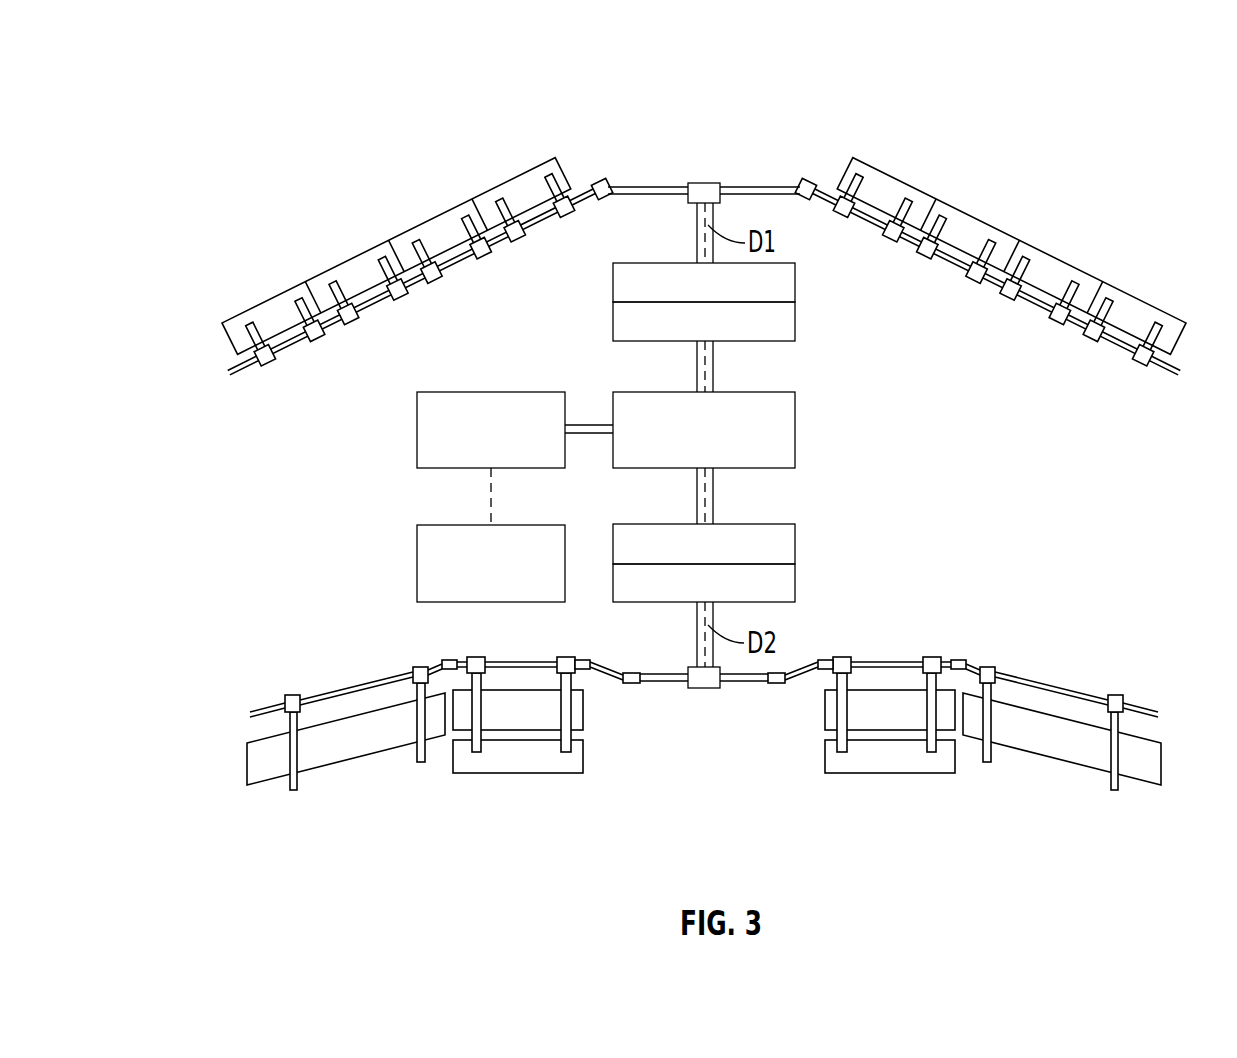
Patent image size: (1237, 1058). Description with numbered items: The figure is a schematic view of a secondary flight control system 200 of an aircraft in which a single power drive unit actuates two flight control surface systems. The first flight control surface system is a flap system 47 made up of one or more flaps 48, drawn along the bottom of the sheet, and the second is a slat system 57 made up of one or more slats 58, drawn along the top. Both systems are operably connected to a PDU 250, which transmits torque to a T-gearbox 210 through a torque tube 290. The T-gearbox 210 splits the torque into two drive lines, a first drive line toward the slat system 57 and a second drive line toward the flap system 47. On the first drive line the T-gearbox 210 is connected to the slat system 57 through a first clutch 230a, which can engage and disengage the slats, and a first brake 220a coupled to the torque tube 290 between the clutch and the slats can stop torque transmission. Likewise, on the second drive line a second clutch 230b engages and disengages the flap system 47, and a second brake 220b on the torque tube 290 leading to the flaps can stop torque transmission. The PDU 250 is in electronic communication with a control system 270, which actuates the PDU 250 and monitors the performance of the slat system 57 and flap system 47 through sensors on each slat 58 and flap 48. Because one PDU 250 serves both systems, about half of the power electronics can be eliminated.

The secondary flight control system 200 is at (475, 52).
The slat system 57 is at (702, 234).
The slat 58 is at (1143, 302).
The torque tube 290 is at (700, 648).
The first brake 220a is at (797, 285).
The first clutch 230a is at (797, 323).
The T-gearbox 210 is at (797, 435).
The second clutch 230b is at (797, 545).
The second brake 220b is at (797, 585).
The PDU 250 is at (417, 432).
The control system 270 is at (417, 563).
The flap system 47 is at (704, 779).
The flap 48 is at (1130, 806).